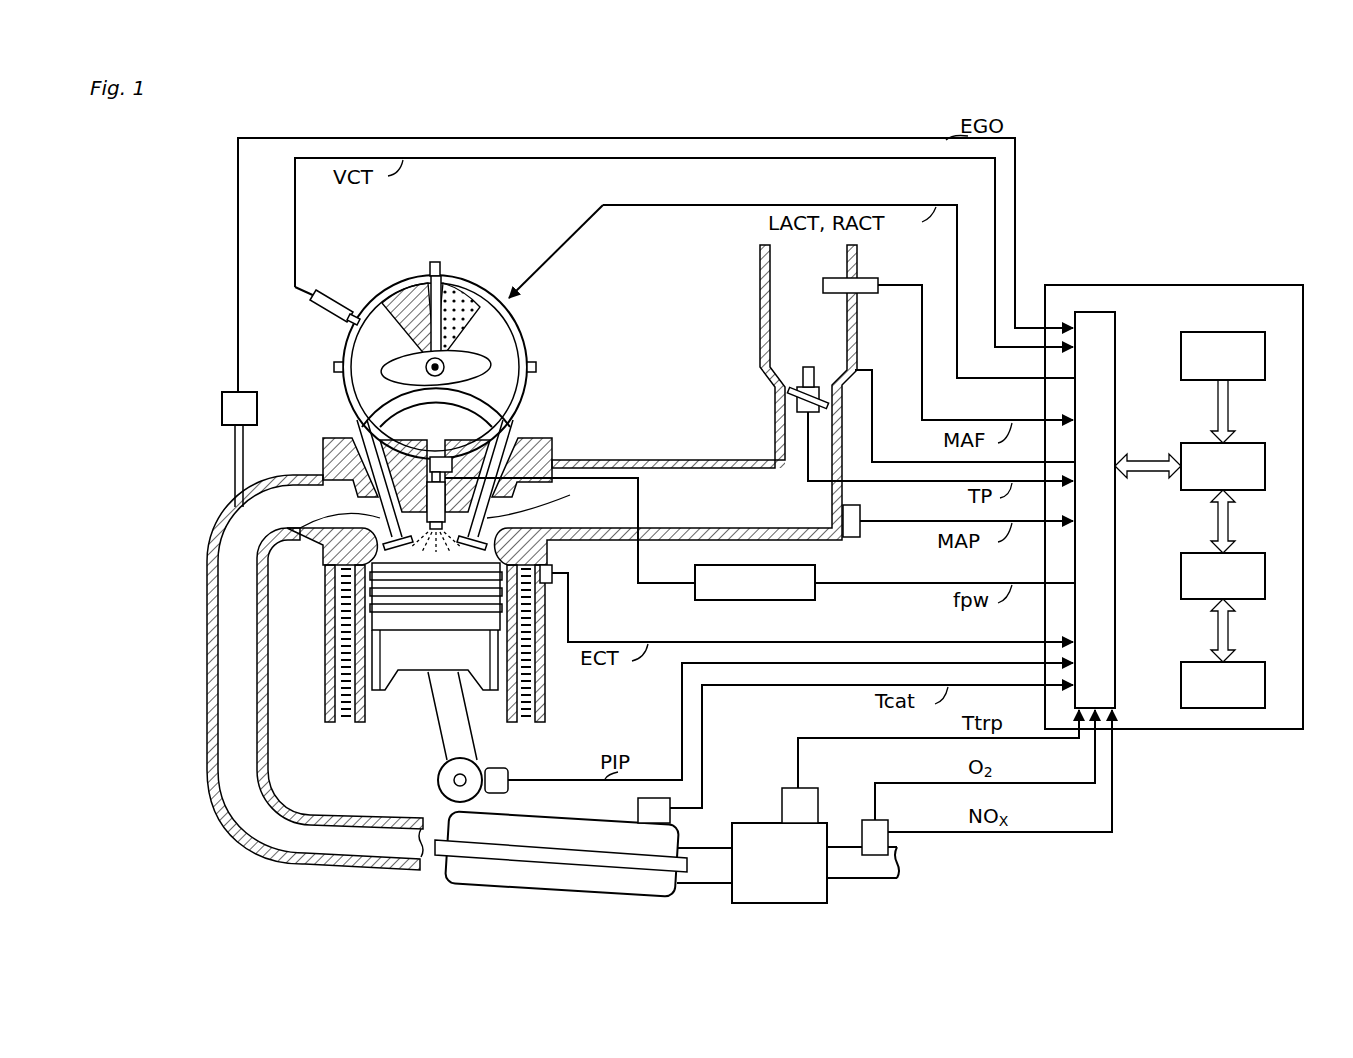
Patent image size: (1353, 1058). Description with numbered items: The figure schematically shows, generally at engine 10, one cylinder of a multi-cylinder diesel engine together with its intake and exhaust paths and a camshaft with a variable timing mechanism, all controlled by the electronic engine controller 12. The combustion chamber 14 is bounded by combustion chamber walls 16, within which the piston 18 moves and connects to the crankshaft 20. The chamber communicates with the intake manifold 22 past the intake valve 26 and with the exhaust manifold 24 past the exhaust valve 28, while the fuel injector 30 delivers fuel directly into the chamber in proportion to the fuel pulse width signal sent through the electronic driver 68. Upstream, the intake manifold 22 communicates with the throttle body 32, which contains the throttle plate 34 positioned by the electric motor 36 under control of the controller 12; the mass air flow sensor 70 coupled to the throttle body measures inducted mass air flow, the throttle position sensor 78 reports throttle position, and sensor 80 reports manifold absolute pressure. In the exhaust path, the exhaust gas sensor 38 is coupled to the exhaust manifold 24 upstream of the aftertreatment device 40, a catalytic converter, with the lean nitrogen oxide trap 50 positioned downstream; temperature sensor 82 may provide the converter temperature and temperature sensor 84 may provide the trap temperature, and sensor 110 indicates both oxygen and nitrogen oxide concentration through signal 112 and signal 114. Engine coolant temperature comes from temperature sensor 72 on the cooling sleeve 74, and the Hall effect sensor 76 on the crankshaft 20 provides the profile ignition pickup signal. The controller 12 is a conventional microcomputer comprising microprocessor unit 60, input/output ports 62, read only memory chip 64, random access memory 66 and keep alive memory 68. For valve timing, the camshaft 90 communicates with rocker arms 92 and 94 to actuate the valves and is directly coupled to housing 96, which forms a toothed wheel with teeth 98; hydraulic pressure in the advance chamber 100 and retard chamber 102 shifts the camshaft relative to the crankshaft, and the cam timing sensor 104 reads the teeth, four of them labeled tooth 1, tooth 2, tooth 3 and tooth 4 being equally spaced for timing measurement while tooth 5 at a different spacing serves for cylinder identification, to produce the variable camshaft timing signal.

The tooth 1 is at (428, 270).
The tooth 2 is at (533, 366).
The tooth 3 is at (445, 475).
The tooth 4 is at (338, 363).
The tooth 5 is at (352, 324).
The engine 10 is at (1187, 180).
The electronic engine controller 12 is at (1268, 286).
The combustion chamber 14 is at (365, 582).
The combustion chamber walls 16 is at (370, 712).
The piston 18 is at (438, 668).
The crankshaft 20 is at (442, 780).
The intake manifold 22 is at (676, 405).
The exhaust manifold 24 is at (210, 540).
The intake valve 26 is at (497, 516).
The exhaust valve 28 is at (378, 516).
The fuel injector 30 is at (430, 478).
The throttle body 32 is at (778, 452).
The throttle plate 34 is at (797, 386).
The electric motor 36 is at (818, 372).
The exhaust gas sensor 38 is at (225, 392).
The aftertreatment device 40 is at (520, 815).
The NOx trap 50 is at (765, 823).
The microprocessor unit 60 is at (1250, 444).
The input/output ports 62 is at (1118, 345).
The read only memory chip 64 is at (1228, 334).
The random access memory 66 is at (1254, 554).
The keep alive memory 68 is at (1254, 663).
The mass air flow sensor 70 is at (875, 280).
The temperature sensor 72 is at (556, 578).
The cooling sleeve 74 is at (546, 682).
The Hall effect sensor 76 is at (498, 768).
The throttle position sensor 78 is at (788, 404).
The manifold absolute pressure sensor 80 is at (860, 517).
The temperature sensor 82 is at (638, 810).
The temperature sensor 84 is at (818, 798).
The camshaft 90 is at (400, 370).
The rocker arm 92 is at (360, 434).
The rocker arm 94 is at (510, 434).
The housing 96 is at (350, 412).
The teeth 98 is at (518, 316).
The advance chamber 100 is at (403, 284).
The retard chamber 102 is at (488, 278).
The cam timing sensor 104 is at (318, 314).
The sensor 110 is at (890, 826).
The signal 112 is at (1092, 772).
The signal 114 is at (1115, 756).